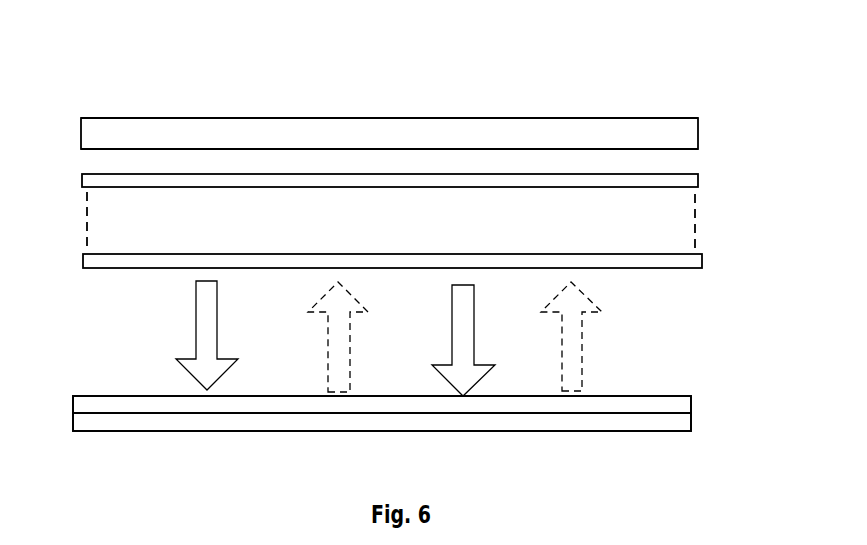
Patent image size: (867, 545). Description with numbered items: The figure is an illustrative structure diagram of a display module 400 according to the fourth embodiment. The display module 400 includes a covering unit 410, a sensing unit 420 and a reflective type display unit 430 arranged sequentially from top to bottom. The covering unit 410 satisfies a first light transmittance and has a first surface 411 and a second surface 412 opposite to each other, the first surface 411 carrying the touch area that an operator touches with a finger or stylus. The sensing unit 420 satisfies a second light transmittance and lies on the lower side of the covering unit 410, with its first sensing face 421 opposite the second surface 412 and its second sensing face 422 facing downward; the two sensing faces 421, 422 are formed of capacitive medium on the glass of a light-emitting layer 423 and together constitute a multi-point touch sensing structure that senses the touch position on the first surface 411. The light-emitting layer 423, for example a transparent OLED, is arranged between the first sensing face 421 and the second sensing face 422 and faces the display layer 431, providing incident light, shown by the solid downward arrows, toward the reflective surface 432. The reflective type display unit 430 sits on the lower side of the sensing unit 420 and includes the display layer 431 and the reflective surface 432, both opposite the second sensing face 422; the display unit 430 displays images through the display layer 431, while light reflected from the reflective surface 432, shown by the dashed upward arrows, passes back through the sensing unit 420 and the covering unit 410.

The display module 400 is at (678, 50).
The covering unit 410 is at (698, 132).
The first surface 411 is at (557, 119).
The second surface 412 is at (694, 149).
The sensing unit 420 is at (742, 196).
The first sensing face 421 is at (82, 175).
The second sensing face 422 is at (83, 265).
The light-emitting layer 423 is at (105, 233).
The reflective type display unit 430 is at (691, 413).
The display layer 431 is at (623, 405).
The reflective surface 432 is at (150, 413).